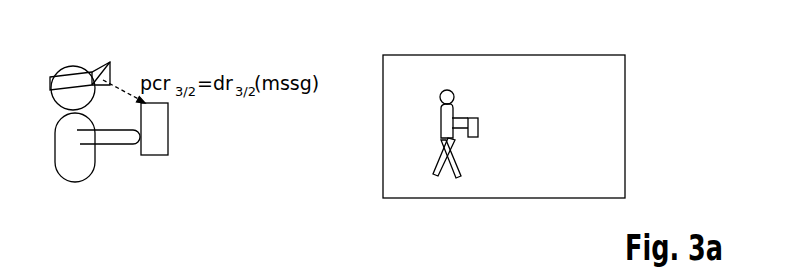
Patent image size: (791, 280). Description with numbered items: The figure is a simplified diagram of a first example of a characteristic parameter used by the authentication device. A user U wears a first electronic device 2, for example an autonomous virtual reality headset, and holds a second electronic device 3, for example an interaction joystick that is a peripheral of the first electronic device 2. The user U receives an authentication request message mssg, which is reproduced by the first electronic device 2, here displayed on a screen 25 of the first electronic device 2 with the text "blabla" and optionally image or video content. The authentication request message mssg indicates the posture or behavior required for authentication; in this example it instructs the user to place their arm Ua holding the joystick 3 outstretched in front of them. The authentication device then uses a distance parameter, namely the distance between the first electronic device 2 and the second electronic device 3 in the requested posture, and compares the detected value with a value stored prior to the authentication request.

The first electronic device 2 is at (110, 62).
The second electronic device 3 is at (168, 140).
The screen 25 is at (498, 55).
The user U is at (80, 172).
The arm Ua is at (122, 139).
The authentication request message mssg is at (611, 78).